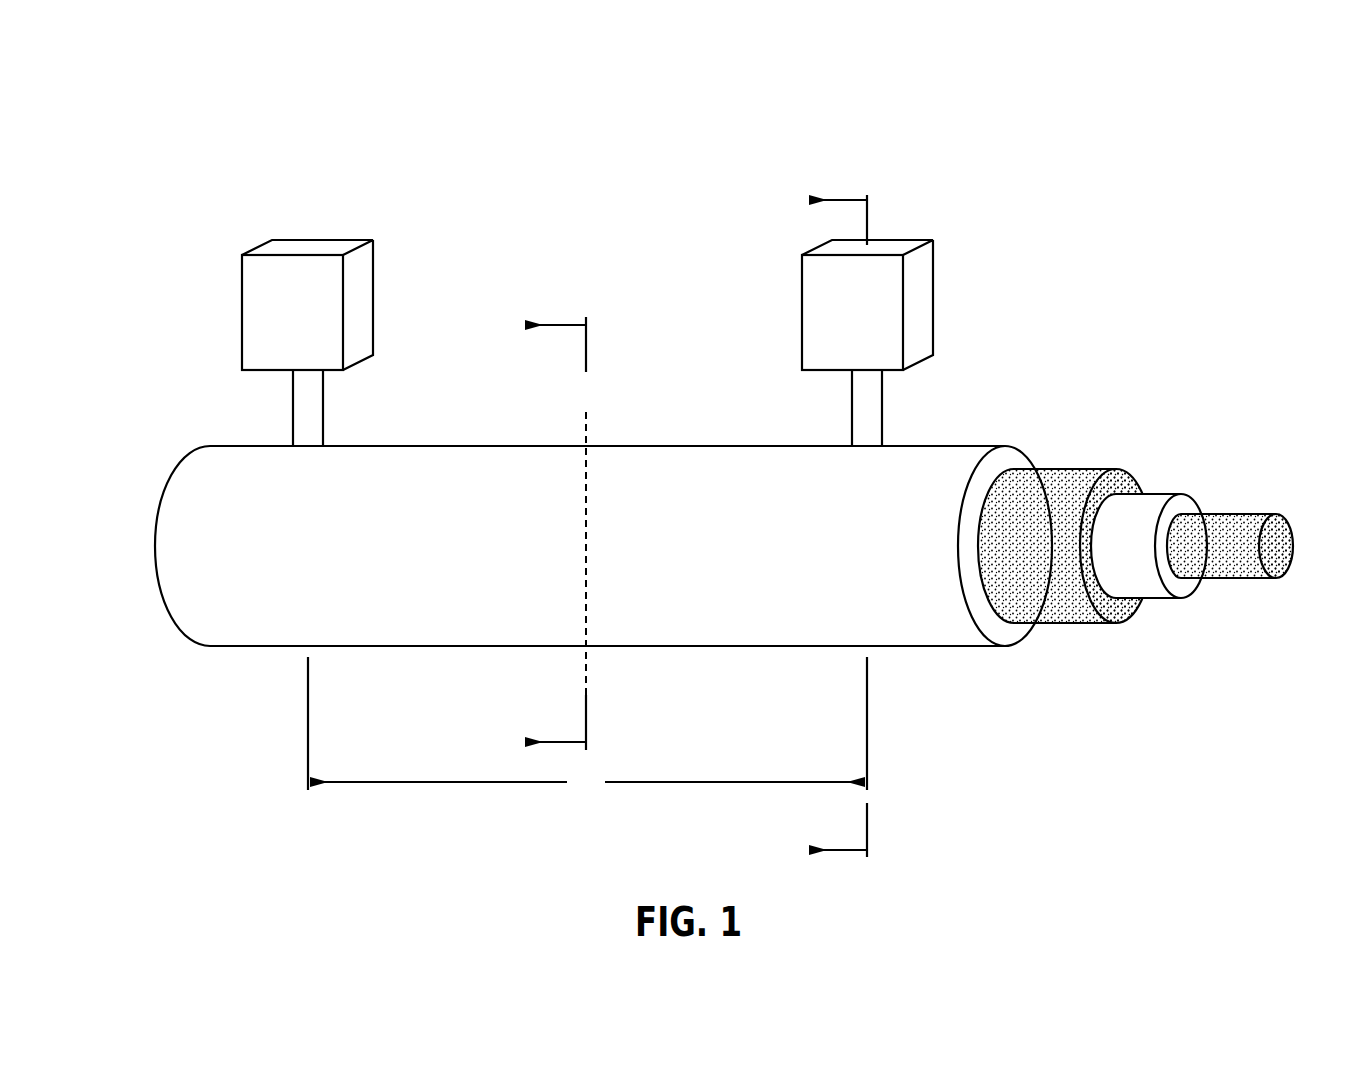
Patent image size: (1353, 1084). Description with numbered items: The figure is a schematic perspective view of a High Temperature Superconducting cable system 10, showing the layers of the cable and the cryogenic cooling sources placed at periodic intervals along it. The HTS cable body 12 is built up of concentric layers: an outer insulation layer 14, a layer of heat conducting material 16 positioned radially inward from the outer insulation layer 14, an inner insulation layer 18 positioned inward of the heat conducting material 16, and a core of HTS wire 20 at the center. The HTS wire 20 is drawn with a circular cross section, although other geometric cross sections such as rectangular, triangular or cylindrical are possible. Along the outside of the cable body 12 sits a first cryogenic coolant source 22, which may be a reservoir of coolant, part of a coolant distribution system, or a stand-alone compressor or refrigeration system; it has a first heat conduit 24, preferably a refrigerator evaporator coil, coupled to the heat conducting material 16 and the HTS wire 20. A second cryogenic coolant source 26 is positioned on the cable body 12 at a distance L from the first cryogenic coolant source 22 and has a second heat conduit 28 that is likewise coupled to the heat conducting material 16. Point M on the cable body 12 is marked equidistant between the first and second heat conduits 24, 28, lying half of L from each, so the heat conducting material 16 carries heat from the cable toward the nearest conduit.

The HTS cable system 10 is at (160, 128).
The HTS cable body 12 is at (652, 413).
The outer insulation layer 14 is at (1015, 456).
The heat conducting material 16 is at (1087, 466).
The inner insulation layer 18 is at (1168, 492).
The HTS wire 20 is at (1252, 512).
The first cryogenic coolant source 22 is at (933, 278).
The first heat conduit 24 is at (884, 405).
The second cryogenic coolant source 26 is at (302, 247).
The second heat conduit 28 is at (293, 415).